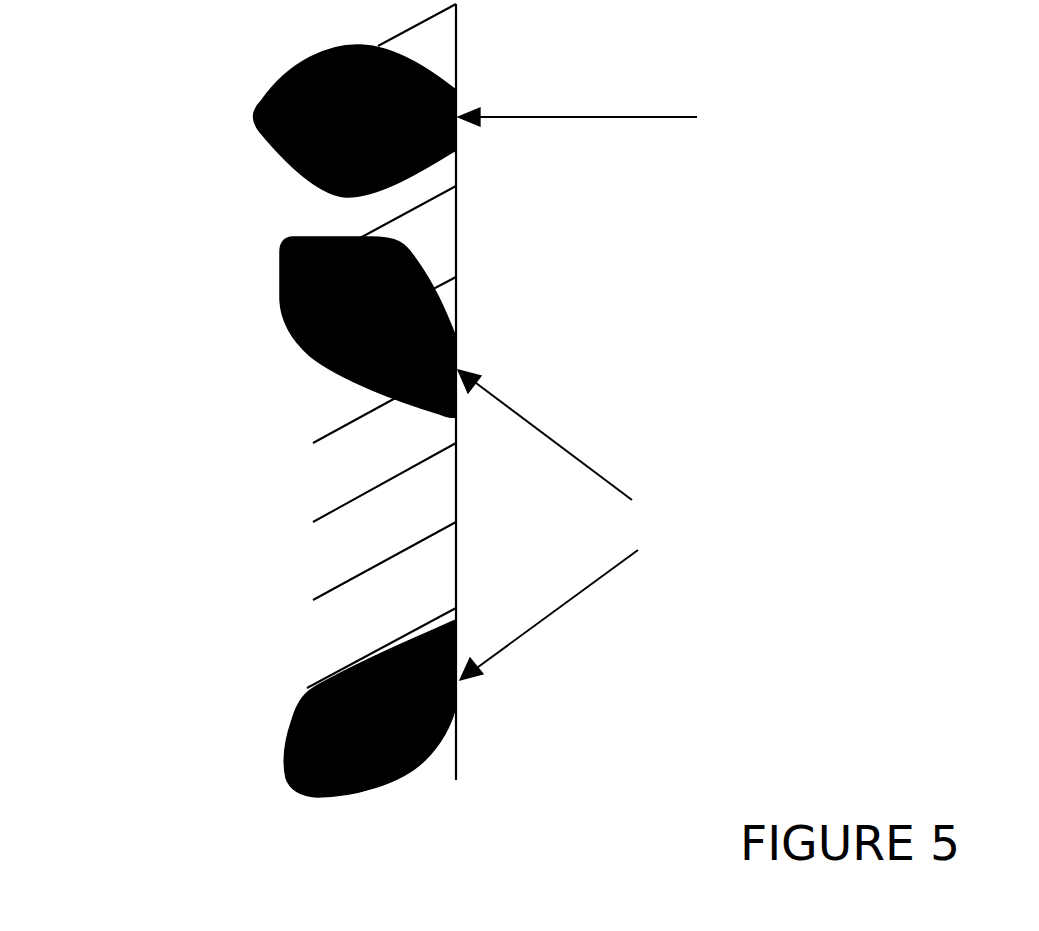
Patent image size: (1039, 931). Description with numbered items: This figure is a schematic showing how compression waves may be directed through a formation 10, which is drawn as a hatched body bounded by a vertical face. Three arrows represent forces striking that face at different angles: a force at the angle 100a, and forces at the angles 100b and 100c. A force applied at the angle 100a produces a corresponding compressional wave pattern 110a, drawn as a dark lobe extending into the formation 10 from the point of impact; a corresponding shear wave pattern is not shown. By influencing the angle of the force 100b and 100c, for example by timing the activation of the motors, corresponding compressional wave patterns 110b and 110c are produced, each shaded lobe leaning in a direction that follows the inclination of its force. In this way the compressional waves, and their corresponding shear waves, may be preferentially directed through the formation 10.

The formation 10 is at (296, 542).
The compressional wave pattern 110a is at (258, 142).
The compressional wave pattern 110b is at (277, 281).
The compressional wave pattern 110c is at (297, 699).
The force angle 100a is at (610, 118).
The force angle 100b is at (570, 435).
The force angle 100c is at (565, 615).